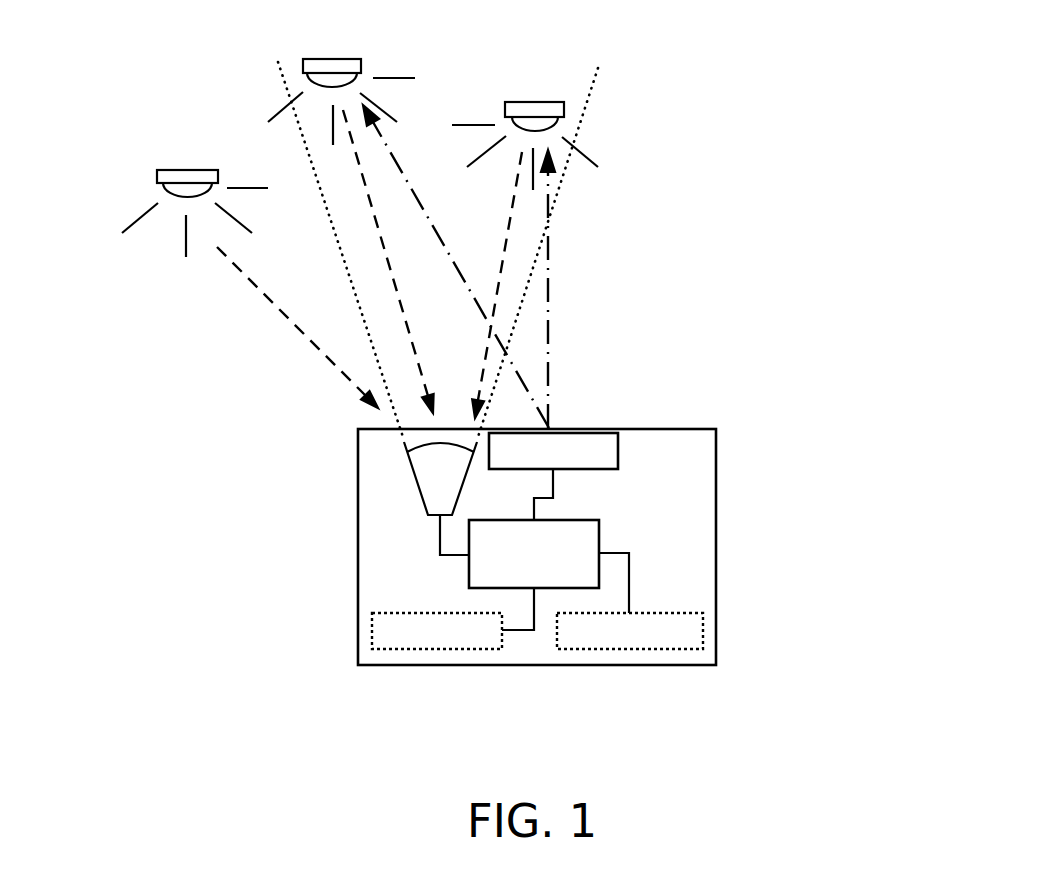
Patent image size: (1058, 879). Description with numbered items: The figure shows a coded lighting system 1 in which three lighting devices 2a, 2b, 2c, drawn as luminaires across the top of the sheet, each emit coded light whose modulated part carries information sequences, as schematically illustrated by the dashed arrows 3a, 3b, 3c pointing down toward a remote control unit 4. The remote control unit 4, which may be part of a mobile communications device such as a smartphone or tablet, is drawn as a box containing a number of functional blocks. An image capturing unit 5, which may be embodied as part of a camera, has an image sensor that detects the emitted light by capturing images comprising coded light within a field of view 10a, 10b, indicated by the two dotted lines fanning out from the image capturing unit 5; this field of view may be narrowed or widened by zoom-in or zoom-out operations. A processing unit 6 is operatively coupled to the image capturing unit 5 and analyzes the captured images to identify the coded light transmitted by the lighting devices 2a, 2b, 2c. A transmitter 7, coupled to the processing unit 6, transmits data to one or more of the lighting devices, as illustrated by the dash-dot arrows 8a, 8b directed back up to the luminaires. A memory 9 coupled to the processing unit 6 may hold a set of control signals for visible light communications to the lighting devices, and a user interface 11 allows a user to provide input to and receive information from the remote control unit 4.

The lighting system 1 is at (790, 185).
The lighting device 2a is at (533, 102).
The lighting device 2b is at (332, 59).
The lighting device 2c is at (188, 170).
The coded light arrow 3a is at (497, 292).
The coded light arrow 3b is at (362, 168).
The coded light arrow 3c is at (268, 295).
The remote control unit 4 is at (357, 547).
The image capturing unit 5 is at (420, 478).
The processing unit 6 is at (599, 528).
The transmitter 7 is at (618, 450).
The data transmission arrow 8a is at (548, 265).
The data transmission arrow 8b is at (405, 180).
The memory 9 is at (438, 649).
The field of view boundary 10a is at (598, 83).
The field of view boundary 10b is at (278, 68).
The user interface 11 is at (703, 630).